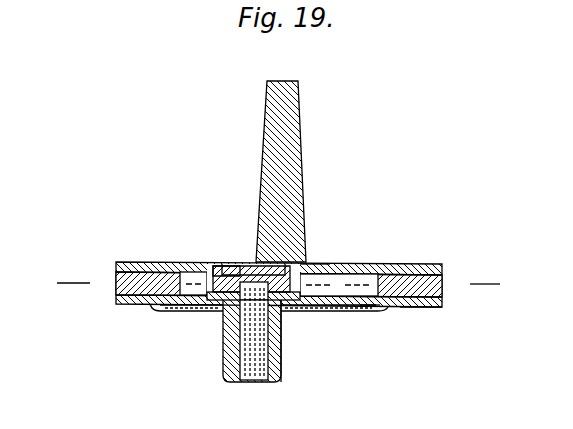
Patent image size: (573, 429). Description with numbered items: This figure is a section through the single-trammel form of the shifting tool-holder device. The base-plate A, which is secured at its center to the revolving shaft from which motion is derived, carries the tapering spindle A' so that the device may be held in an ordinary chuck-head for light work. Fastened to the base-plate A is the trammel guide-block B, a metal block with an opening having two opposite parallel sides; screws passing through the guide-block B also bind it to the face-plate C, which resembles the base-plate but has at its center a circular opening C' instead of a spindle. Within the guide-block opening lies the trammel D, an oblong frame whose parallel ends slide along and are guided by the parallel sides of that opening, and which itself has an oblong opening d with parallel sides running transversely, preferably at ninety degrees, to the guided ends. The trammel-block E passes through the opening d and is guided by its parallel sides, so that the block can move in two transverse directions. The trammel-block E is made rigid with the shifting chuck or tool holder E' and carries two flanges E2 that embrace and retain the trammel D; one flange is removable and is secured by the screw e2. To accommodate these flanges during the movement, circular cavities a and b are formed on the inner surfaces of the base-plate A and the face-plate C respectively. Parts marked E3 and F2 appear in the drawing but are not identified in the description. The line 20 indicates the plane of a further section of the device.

The base-plate A is at (279, 269).
The tapering spindle A' is at (301, 171).
The trammel guide-block B is at (432, 304).
The face-plate C is at (163, 321).
The circular opening C' is at (334, 327).
The trammel D is at (220, 262).
The oblong opening d is at (311, 262).
The trammel-block E is at (237, 335).
The shifting chuck or tool holder E' is at (296, 341).
The flanges E2 is at (243, 262).
The washer plate E3 is at (172, 308).
The locking nut F2 is at (209, 302).
The circular cavity a is at (345, 271).
The circular cavity b is at (366, 306).
The screw e2 is at (225, 296).
The section line 20 is at (278, 284).